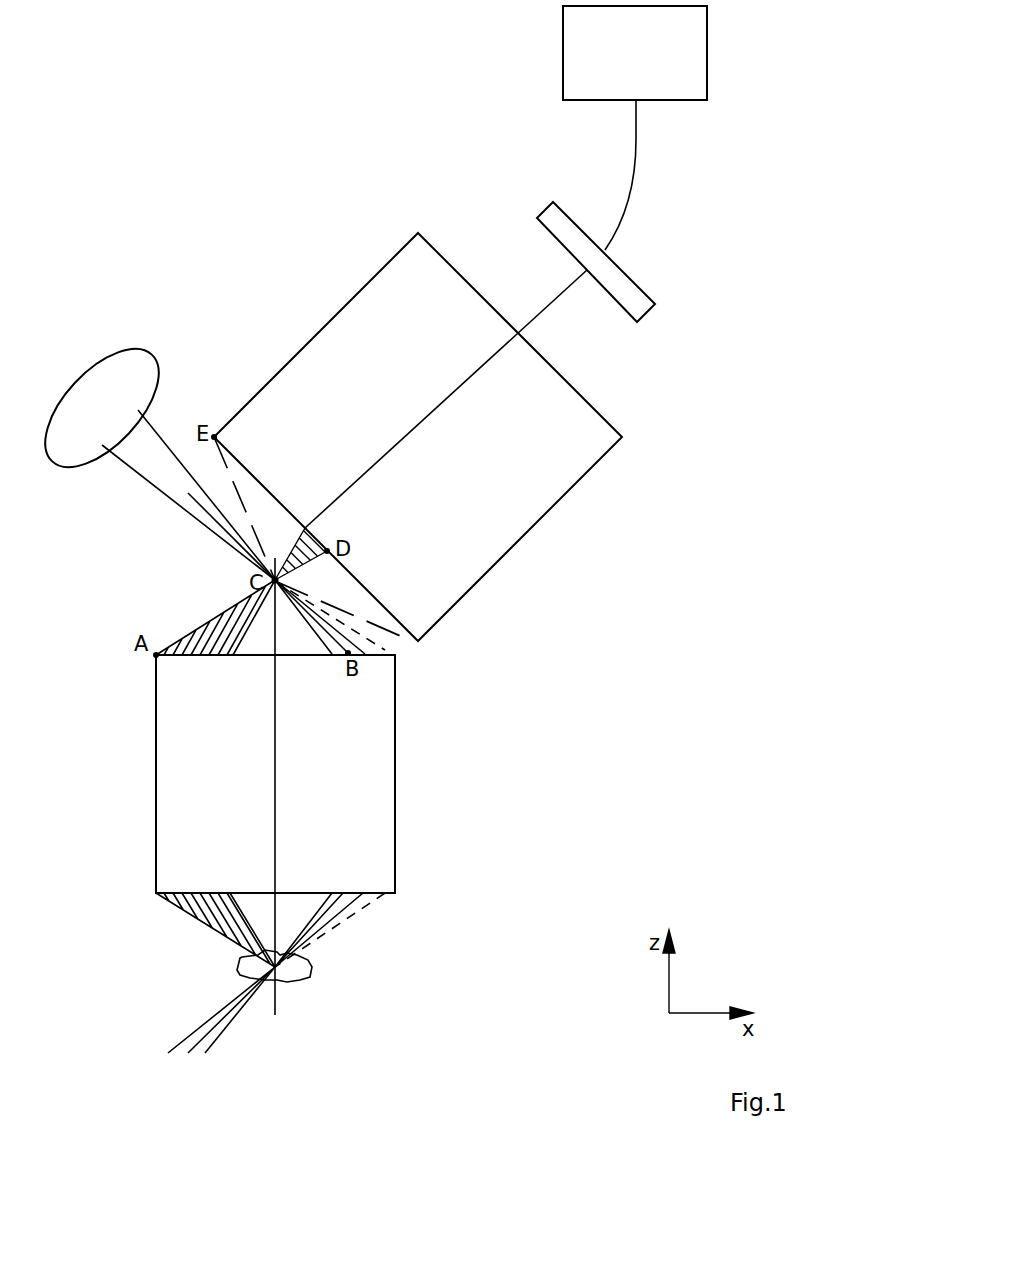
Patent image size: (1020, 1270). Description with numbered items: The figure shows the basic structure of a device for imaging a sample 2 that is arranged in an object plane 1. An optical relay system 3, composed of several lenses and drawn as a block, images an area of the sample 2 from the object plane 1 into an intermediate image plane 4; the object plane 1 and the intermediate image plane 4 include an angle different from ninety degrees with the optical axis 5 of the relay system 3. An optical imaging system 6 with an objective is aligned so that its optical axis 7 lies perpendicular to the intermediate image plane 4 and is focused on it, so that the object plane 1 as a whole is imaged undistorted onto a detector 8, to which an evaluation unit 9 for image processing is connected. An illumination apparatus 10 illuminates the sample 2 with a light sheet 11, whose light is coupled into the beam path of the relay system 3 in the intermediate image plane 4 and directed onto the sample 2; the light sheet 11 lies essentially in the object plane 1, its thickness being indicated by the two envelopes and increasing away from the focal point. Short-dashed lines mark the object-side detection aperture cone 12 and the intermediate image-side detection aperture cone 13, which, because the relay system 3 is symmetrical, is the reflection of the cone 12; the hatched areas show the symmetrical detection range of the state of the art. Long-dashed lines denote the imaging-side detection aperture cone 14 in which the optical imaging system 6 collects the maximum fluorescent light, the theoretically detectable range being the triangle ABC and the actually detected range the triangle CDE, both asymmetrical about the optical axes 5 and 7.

The object plane 1 is at (197, 1043).
The sample 2 is at (300, 968).
The optical relay system 3 is at (163, 798).
The intermediate image plane 4 is at (187, 495).
The optical axis 5 is at (277, 1010).
The optical imaging system 6 is at (550, 493).
The optical axis 7 is at (558, 305).
The detector 8 is at (643, 308).
The evaluation unit 9 is at (696, 71).
The illumination apparatus 10 is at (127, 375).
The light sheet 11 is at (233, 1022).
The object-side detection aperture cone 12 is at (380, 907).
The intermediate image-side detection aperture cone 13 is at (380, 640).
The imaging-side detection aperture cone 14 is at (400, 635).